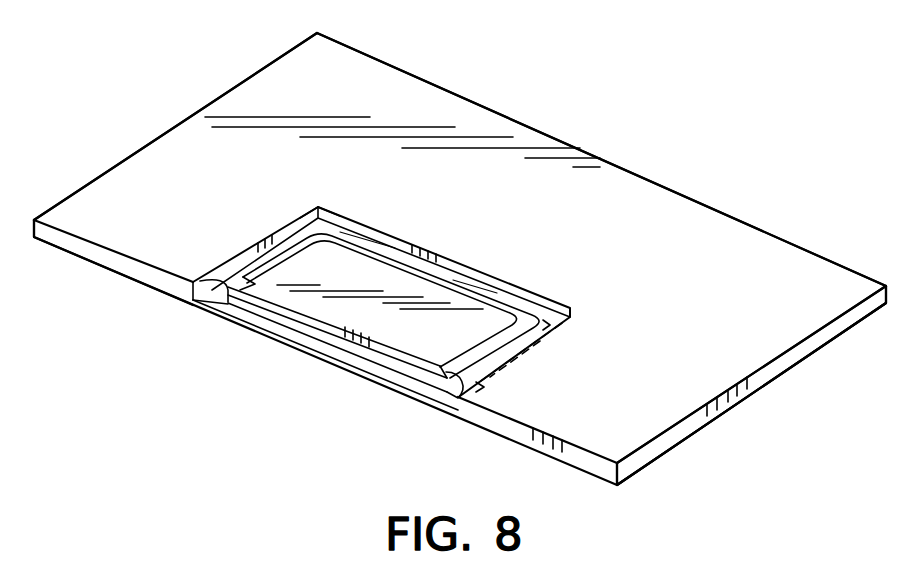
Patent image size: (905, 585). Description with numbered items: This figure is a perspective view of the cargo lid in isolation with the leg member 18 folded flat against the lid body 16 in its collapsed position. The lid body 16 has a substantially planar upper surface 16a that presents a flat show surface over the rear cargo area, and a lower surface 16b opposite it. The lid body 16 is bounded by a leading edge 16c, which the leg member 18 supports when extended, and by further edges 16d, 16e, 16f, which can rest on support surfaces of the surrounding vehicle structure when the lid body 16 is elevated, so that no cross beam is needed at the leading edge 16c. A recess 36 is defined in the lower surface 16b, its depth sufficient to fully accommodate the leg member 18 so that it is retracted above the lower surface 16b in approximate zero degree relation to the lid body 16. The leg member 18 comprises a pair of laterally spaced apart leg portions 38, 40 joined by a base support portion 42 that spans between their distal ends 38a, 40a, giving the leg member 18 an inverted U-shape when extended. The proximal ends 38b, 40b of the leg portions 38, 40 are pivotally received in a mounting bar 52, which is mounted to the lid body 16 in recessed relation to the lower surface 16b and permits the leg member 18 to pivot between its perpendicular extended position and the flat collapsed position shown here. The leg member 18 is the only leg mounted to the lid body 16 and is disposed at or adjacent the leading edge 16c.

The lid body 16 is at (617, 183).
The upper surface 16a is at (677, 445).
The lower surface 16b is at (702, 238).
The leading edge 16c is at (142, 272).
The edge 16d is at (503, 112).
The edge 16e is at (157, 133).
The edge 16f is at (772, 375).
The leg member 18 is at (492, 283).
The recess 36 is at (538, 318).
The leg portion 38 is at (263, 248).
The distal end 38a is at (308, 228).
The proximal end 38b is at (222, 290).
The leg portion 40 is at (487, 350).
The distal end 40a is at (532, 325).
The proximal end 40b is at (460, 385).
The base support portion 42 is at (444, 275).
The mounting bar 52 is at (347, 350).